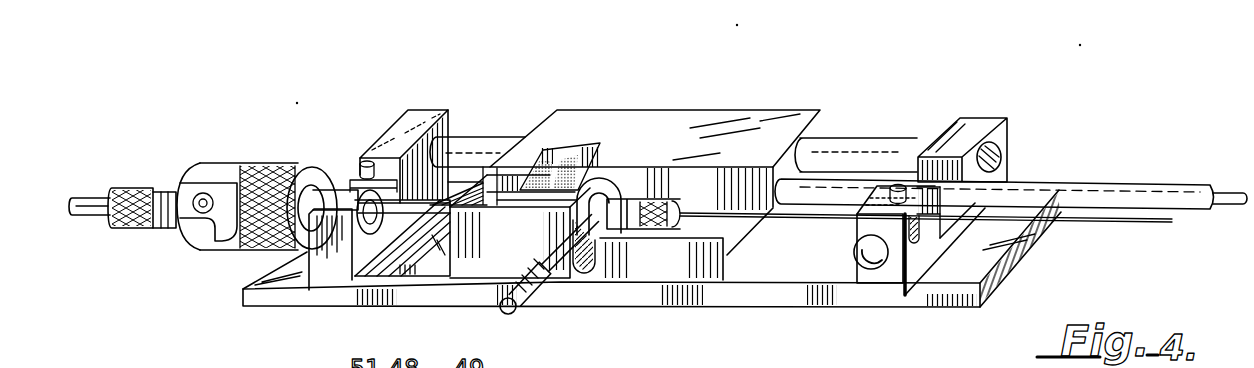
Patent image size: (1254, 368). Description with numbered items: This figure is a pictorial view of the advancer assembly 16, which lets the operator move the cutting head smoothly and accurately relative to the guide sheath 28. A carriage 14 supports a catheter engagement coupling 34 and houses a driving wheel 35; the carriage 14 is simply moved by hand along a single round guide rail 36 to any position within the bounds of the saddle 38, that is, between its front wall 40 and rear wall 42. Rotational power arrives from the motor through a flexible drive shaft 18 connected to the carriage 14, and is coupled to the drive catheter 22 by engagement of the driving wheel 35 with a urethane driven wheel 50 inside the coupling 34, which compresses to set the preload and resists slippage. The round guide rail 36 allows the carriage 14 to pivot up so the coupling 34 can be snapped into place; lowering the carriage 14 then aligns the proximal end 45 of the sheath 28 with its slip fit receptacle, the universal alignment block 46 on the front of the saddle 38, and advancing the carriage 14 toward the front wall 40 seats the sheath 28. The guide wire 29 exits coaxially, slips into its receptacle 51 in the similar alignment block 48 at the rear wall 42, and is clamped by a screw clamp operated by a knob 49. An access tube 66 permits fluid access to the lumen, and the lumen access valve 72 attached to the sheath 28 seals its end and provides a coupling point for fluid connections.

The carriage 14 is at (673, 120).
The advancer assembly 16 is at (994, 118).
The flexible drive shaft 18 is at (1073, 193).
The drive catheter 22 is at (417, 215).
The guide sheath 28 is at (88, 197).
The guide wire 29 is at (1122, 225).
The catheter engagement coupling 34 is at (537, 200).
The driving wheel 35 is at (557, 160).
The guide rail 36 is at (480, 142).
The saddle 38 is at (373, 267).
The front wall 40 is at (450, 130).
The rear wall 42 is at (950, 131).
The proximal end 45 is at (314, 198).
The universal alignment block 46 is at (333, 185).
The alignment block 48 is at (864, 266).
The knob 49 is at (860, 250).
The driven wheel 50 is at (597, 157).
The receptacle 51 is at (930, 240).
The access tube 66 is at (557, 267).
The lumen access valve 72 is at (233, 164).